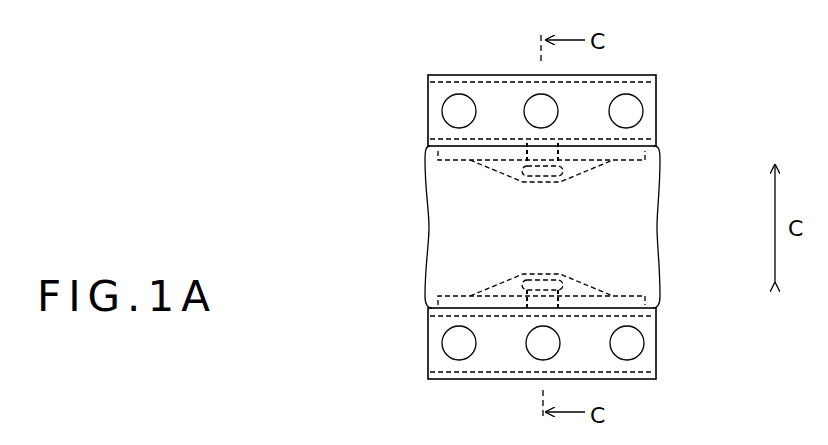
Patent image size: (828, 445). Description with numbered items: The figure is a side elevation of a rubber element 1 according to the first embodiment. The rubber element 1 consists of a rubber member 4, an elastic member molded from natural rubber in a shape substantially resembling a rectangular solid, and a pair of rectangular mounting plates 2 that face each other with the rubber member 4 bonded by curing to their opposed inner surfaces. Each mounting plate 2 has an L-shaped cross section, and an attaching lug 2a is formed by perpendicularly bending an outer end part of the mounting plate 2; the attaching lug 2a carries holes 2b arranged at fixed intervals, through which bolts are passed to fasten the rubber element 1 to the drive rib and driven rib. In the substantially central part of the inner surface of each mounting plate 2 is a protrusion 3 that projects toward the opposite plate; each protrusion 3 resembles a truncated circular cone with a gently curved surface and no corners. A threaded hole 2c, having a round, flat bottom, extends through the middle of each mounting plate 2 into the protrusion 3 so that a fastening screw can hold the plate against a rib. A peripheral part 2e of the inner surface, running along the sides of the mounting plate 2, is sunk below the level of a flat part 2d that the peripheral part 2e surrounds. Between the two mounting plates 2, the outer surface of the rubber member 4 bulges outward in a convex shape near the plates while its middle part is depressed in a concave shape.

The rubber element 1 is at (672, 68).
The mounting plate 2 is at (647, 138).
The attaching lug 2a is at (653, 100).
The hole 2b is at (535, 105).
The threaded hole 2c is at (520, 160).
The flat part 2d is at (617, 160).
The peripheral part 2e is at (438, 155).
The protrusion 3 is at (510, 180).
The rubber member 4 is at (648, 216).